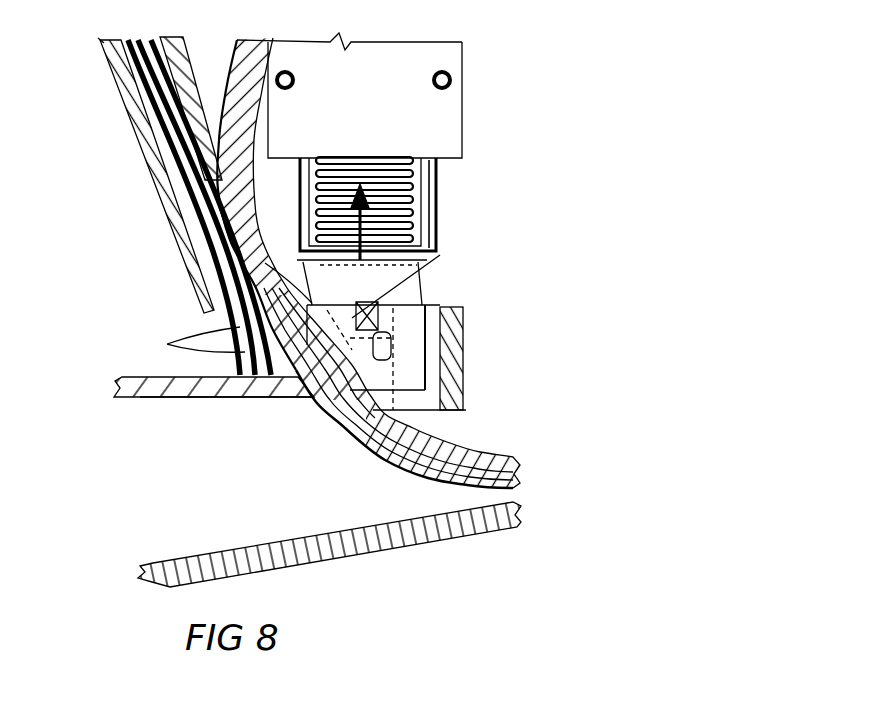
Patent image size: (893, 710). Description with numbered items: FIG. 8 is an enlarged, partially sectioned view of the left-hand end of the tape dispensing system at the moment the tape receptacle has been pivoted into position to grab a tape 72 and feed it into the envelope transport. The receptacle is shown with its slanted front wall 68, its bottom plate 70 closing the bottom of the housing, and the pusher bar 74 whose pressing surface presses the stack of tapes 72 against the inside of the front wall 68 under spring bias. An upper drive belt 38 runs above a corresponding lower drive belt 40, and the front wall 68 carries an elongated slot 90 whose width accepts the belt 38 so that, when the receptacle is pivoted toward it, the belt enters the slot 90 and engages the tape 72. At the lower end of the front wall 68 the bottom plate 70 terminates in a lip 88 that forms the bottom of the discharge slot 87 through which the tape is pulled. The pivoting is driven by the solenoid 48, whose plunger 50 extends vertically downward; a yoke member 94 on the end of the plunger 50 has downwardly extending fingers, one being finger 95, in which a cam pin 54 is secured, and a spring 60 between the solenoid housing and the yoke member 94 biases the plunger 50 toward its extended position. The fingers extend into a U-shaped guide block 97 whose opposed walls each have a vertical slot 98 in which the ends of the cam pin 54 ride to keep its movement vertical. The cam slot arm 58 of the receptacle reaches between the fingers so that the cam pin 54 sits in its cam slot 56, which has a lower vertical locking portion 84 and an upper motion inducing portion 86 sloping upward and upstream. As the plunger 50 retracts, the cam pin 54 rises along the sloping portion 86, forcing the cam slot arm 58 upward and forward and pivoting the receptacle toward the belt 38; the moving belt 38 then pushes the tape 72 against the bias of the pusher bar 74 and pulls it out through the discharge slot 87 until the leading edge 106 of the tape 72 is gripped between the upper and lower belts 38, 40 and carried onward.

The upper drive belt 38 is at (247, 55).
The lower drive belt 40 is at (272, 548).
The solenoid 48 is at (443, 108).
The plunger 50 is at (403, 203).
The cam pin 54 is at (440, 257).
The cam slot 56 is at (312, 312).
The cam slot arm 58 is at (465, 388).
The spring 60 is at (405, 182).
The front wall 68 is at (195, 92).
The bottom plate 70 is at (120, 380).
The tape 72 is at (183, 339).
The pusher bar 74 is at (160, 185).
The locking portion 84 is at (428, 325).
The motion inducing portion 86 is at (378, 338).
The discharge slot 87 is at (290, 400).
The lip 88 is at (250, 400).
The elongated slot 90 is at (207, 137).
The yoke member 94 is at (435, 213).
The finger 95 is at (418, 298).
The guide block 97 is at (471, 362).
The vertical slot 98 is at (406, 410).
The leading edge 106 is at (388, 462).